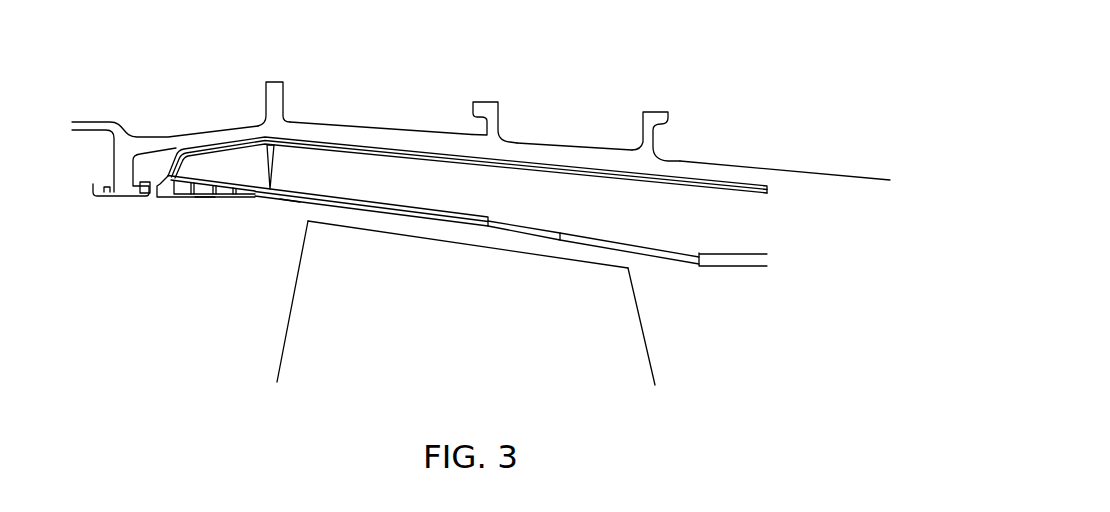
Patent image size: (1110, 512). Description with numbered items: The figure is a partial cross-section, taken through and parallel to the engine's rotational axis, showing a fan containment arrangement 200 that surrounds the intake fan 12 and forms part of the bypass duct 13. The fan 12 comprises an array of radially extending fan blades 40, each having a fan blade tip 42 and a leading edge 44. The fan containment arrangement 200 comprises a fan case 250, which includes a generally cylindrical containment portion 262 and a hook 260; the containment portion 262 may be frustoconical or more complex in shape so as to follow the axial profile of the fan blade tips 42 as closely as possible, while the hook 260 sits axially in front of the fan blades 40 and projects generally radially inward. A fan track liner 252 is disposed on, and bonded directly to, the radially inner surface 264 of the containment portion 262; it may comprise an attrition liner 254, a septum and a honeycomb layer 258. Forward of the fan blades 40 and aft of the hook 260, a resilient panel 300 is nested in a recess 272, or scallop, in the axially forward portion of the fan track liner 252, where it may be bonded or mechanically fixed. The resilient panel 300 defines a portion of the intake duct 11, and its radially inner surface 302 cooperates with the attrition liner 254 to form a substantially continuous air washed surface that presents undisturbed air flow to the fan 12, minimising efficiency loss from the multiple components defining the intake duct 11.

The fan containment arrangement 200 is at (600, 76).
The fan track liner 252 is at (308, 155).
The generally cylindrical containment portion 262 is at (457, 142).
The fan case 250 is at (680, 165).
The hook 260 is at (118, 186).
The radially inner surface 264 is at (747, 184).
The honeycomb layer 258 is at (794, 237).
The attrition liner 254 is at (660, 281).
The resilient panel 300 is at (197, 170).
The radially inner surface 302 is at (241, 213).
The recess 272 is at (219, 178).
The fan blade tip 42 is at (375, 230).
The fan blade 40 is at (313, 373).
The leading edge 44 is at (282, 352).
The intake fan 12 is at (232, 386).
The intake duct 11 is at (258, 300).
The bypass duct 13 is at (794, 367).